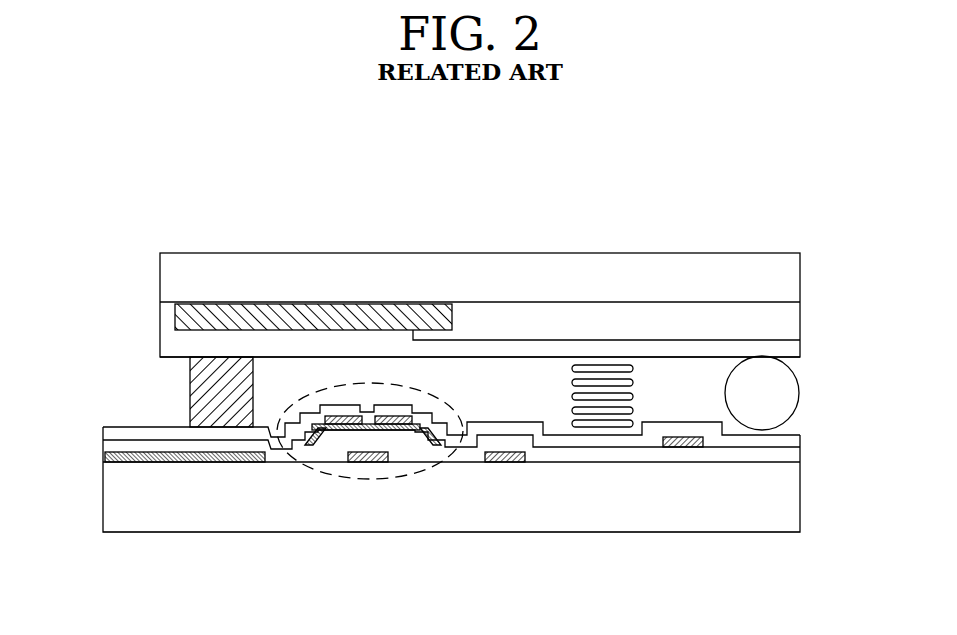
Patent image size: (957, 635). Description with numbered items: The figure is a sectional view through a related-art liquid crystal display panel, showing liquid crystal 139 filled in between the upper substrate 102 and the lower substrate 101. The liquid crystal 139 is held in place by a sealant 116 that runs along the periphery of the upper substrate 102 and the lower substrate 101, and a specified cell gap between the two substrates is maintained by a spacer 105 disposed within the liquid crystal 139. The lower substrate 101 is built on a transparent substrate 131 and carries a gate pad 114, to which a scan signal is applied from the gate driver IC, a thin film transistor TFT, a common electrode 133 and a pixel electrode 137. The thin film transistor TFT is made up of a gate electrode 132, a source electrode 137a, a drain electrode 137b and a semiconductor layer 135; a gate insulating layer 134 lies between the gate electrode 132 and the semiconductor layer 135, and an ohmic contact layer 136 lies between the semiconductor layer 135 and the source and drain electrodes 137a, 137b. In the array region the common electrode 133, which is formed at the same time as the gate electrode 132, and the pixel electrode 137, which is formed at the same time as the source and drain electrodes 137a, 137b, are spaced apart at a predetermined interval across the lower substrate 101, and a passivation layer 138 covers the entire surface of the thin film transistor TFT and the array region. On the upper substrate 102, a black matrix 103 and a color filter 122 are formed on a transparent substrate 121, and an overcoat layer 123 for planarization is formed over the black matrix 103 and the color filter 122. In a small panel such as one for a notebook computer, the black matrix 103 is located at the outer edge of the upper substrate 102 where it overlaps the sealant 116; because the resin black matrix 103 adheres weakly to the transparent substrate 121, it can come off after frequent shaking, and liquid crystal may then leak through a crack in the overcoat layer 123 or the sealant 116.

The lower substrate 101 is at (157, 537).
The upper substrate 102 is at (269, 249).
The black matrix 103 is at (190, 317).
The spacer 105 is at (782, 377).
The gate pad 114 is at (108, 457).
The sealant 116 is at (200, 378).
The transparent substrate 121 is at (175, 266).
The color filter 122 is at (790, 318).
The overcoat layer 123 is at (172, 344).
The transparent substrate 131 is at (797, 510).
The gate electrode 132 is at (368, 457).
The common electrode 133 is at (495, 463).
The gate insulating layer 134 is at (797, 458).
The semiconductor layer 135 is at (348, 431).
The ohmic contact layer 136 is at (316, 438).
The pixel electrode 137 is at (683, 448).
The source electrode 137a is at (300, 440).
The drain electrode 137b is at (424, 440).
The passivation layer 138 is at (797, 431).
The liquid crystal 139 is at (588, 428).
The thin film transistor TFT is at (393, 380).